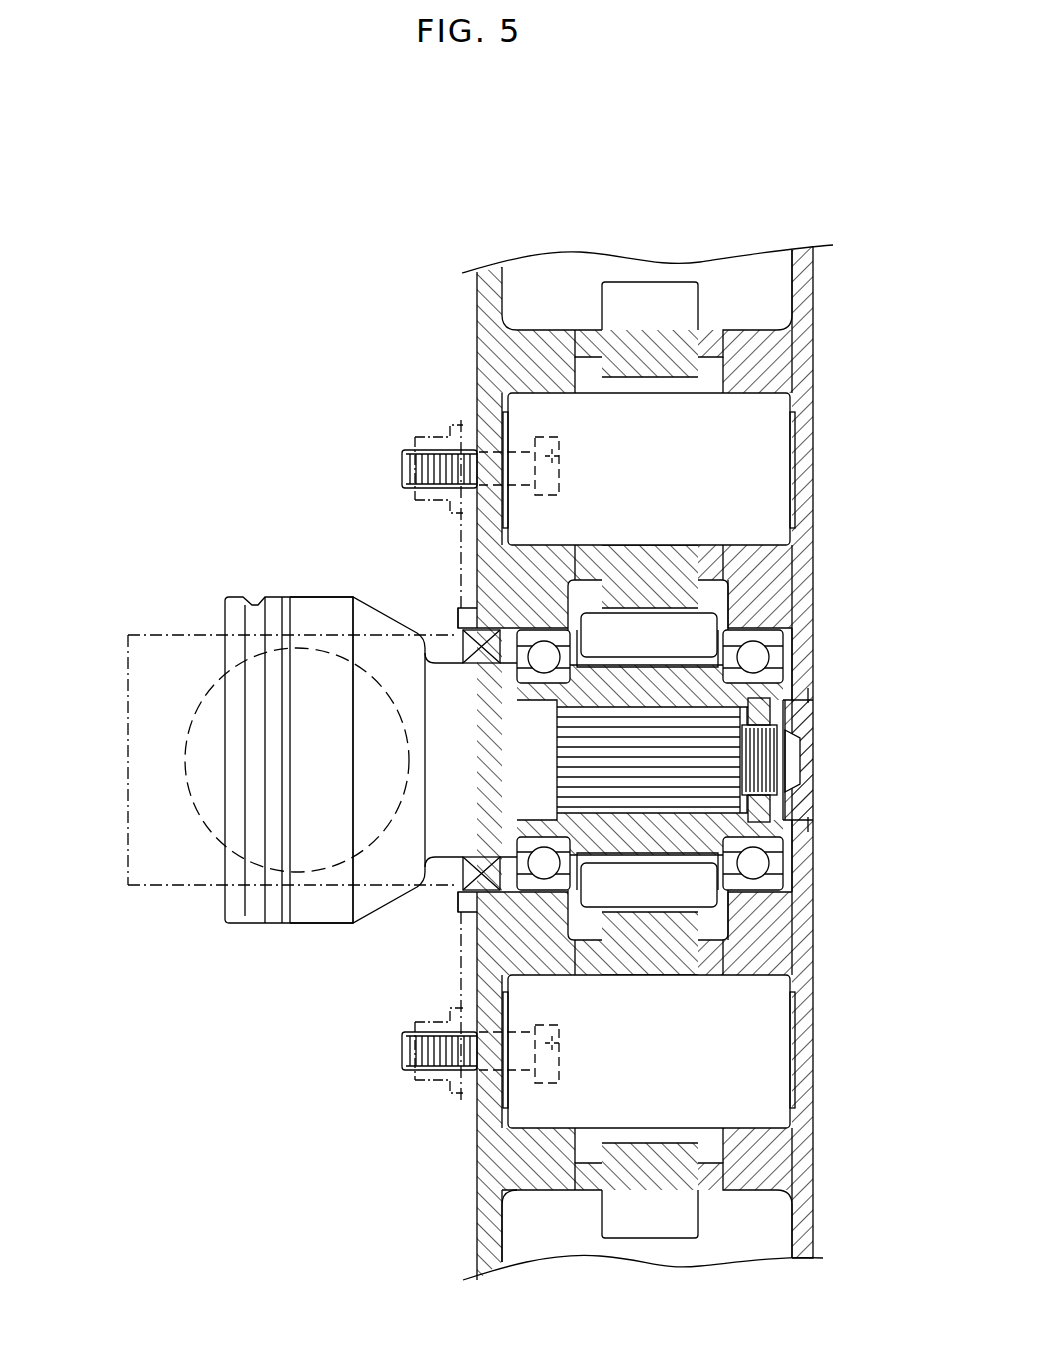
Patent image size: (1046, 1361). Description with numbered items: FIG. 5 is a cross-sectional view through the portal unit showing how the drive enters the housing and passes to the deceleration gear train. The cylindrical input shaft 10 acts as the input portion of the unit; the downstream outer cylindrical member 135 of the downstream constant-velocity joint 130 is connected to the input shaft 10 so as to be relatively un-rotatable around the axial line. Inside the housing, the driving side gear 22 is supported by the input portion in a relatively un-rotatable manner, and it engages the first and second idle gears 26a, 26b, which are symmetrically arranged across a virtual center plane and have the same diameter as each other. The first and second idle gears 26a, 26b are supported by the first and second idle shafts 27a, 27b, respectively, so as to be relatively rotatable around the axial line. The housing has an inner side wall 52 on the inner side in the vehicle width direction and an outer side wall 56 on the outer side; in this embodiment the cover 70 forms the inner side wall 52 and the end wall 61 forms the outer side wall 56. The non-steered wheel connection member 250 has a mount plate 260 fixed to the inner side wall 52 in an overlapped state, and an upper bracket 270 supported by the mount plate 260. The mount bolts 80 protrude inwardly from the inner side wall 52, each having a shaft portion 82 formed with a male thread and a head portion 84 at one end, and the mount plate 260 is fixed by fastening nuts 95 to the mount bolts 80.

The cylindrical input shaft 10 is at (673, 690).
The driving side gear 22 is at (705, 622).
The first idle gear 26a is at (645, 1223).
The second idle gear 26b is at (672, 305).
The first idle shaft 27a is at (776, 1057).
The second idle shaft 27b is at (776, 466).
The inner side wall 52 is at (645, 762).
The outer side wall 56 is at (835, 1177).
The end wall 61 is at (793, 932).
The cover 70 is at (577, 760).
The mount bolt 80 is at (567, 471).
The shaft portion 82 is at (404, 468).
The head portion 84 is at (565, 455).
The nut 95 is at (432, 420).
The downstream constant-velocity joint 130 is at (214, 922).
The downstream outer cylindrical member 135 is at (313, 908).
The non-steered wheel connection member 250 is at (415, 542).
The mount plate 260 is at (463, 569).
The upper bracket 270 is at (153, 637).